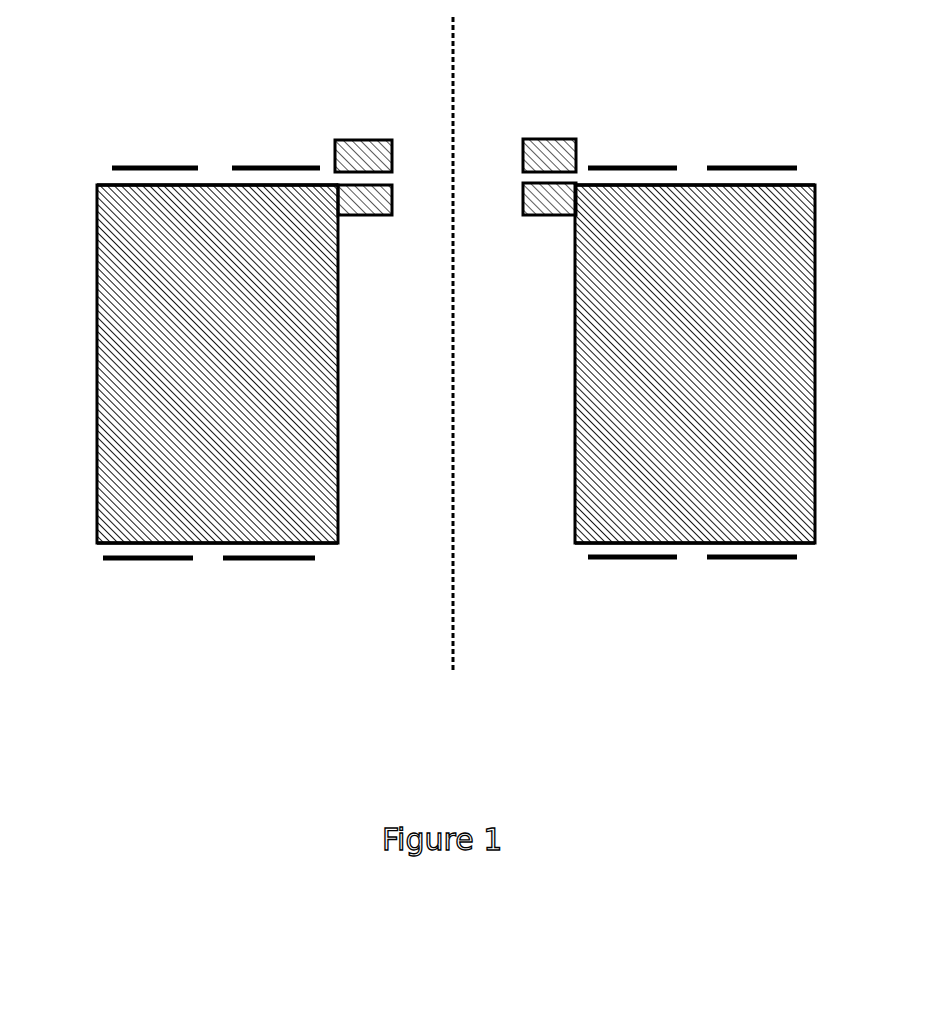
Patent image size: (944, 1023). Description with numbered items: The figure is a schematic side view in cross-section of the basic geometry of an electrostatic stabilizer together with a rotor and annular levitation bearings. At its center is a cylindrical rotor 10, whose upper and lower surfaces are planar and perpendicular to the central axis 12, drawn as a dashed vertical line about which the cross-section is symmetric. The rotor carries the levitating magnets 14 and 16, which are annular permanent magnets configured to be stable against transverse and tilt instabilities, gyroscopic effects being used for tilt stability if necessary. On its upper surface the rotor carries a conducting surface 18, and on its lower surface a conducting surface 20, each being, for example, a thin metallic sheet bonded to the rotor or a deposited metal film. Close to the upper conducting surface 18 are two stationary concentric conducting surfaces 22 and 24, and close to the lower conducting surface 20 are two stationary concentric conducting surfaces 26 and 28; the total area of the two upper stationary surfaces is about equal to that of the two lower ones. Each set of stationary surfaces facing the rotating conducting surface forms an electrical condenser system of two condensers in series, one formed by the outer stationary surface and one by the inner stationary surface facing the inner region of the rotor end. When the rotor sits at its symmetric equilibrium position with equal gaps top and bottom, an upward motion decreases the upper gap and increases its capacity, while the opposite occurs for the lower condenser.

The cylindrical rotor 10 is at (96, 300).
The central axis 12 is at (455, 67).
The levitating magnet 14 is at (362, 140).
The levitating magnet 16 is at (363, 217).
The upper conducting surface 18 is at (220, 183).
The lower conducting surface 20 is at (205, 550).
The stationary concentric conducting surface 22 is at (165, 165).
The stationary concentric conducting surface 24 is at (278, 165).
The stationary concentric conducting surface 26 is at (155, 567).
The stationary concentric conducting surface 28 is at (272, 566).